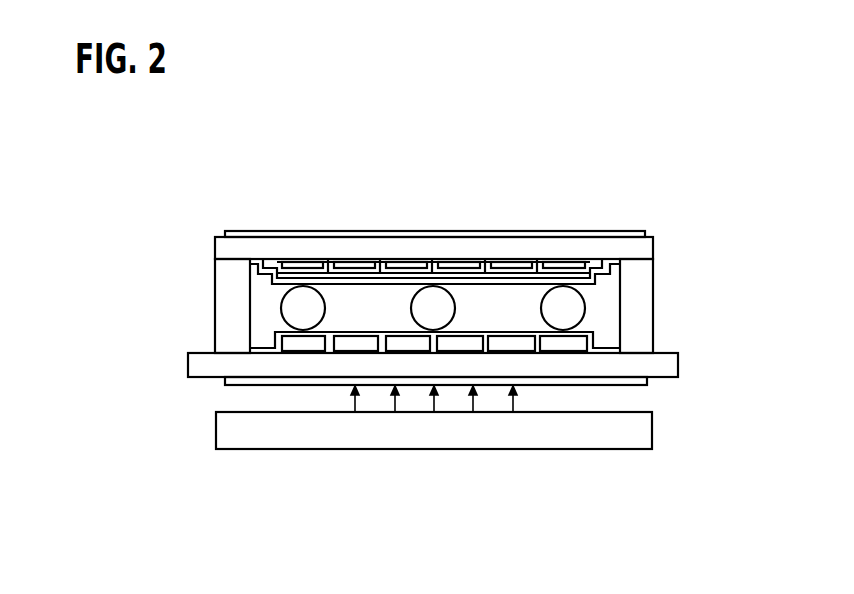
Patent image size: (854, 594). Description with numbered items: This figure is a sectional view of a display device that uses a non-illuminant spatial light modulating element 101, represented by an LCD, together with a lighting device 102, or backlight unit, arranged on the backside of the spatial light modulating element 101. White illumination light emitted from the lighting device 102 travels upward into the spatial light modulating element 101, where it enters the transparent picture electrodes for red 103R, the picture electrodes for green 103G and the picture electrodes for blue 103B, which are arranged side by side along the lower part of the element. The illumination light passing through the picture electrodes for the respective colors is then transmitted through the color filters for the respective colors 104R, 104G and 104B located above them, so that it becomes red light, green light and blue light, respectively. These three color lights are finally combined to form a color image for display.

The spatial light modulating element 101 is at (213, 276).
The lighting device 102 is at (355, 435).
The picture electrodes for red 103R is at (302, 344).
The picture electrodes for green 103G is at (370, 344).
The picture electrodes for blue 103B is at (415, 344).
The color filter for red 104R is at (308, 266).
The color filter for green 104G is at (363, 262).
The color filter for blue 104B is at (410, 262).